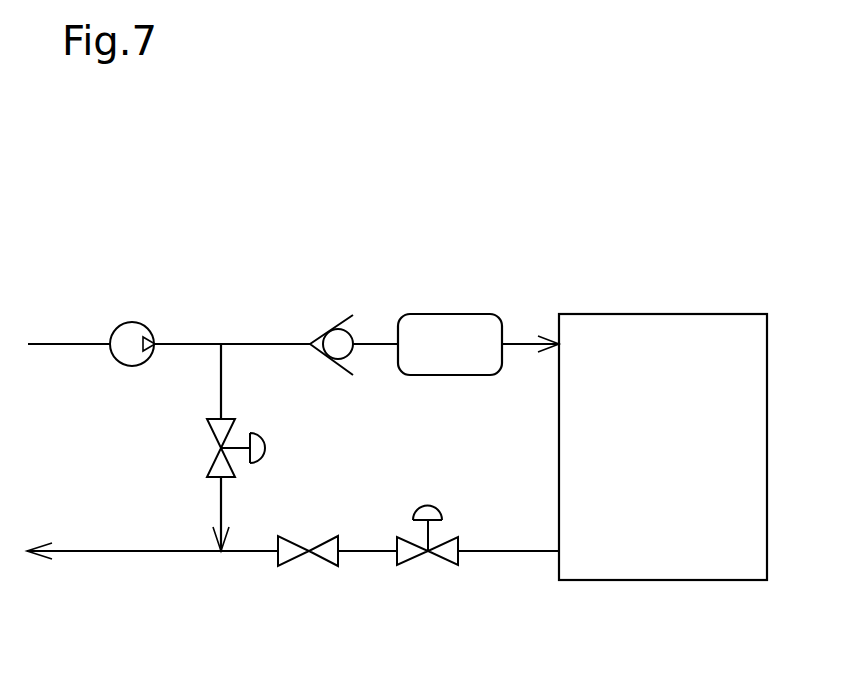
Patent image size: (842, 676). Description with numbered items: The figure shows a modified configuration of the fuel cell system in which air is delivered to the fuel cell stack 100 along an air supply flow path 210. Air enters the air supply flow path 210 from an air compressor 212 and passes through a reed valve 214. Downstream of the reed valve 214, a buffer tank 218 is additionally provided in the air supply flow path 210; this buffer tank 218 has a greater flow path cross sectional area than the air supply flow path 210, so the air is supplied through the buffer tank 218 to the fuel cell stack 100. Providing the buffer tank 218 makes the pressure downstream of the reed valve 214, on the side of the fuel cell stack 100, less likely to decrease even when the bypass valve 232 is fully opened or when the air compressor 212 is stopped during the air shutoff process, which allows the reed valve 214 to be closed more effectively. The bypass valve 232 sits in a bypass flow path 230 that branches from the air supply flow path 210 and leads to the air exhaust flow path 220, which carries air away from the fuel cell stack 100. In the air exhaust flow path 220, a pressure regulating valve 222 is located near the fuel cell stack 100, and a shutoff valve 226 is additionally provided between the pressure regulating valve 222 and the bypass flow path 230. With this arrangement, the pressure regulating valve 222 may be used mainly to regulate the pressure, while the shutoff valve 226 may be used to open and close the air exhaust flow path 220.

The fuel cell stack 100 is at (700, 313).
The air supply flow path 210 is at (263, 343).
The air compressor 212 is at (128, 322).
The reed valve 214 is at (337, 328).
The buffer tank 218 is at (456, 313).
The air exhaust flow path 220 is at (150, 553).
The pressure regulating valve 222 is at (420, 505).
The shutoff valve 226 is at (320, 537).
The bypass flow path 230 is at (220, 508).
The bypass valve 232 is at (262, 435).